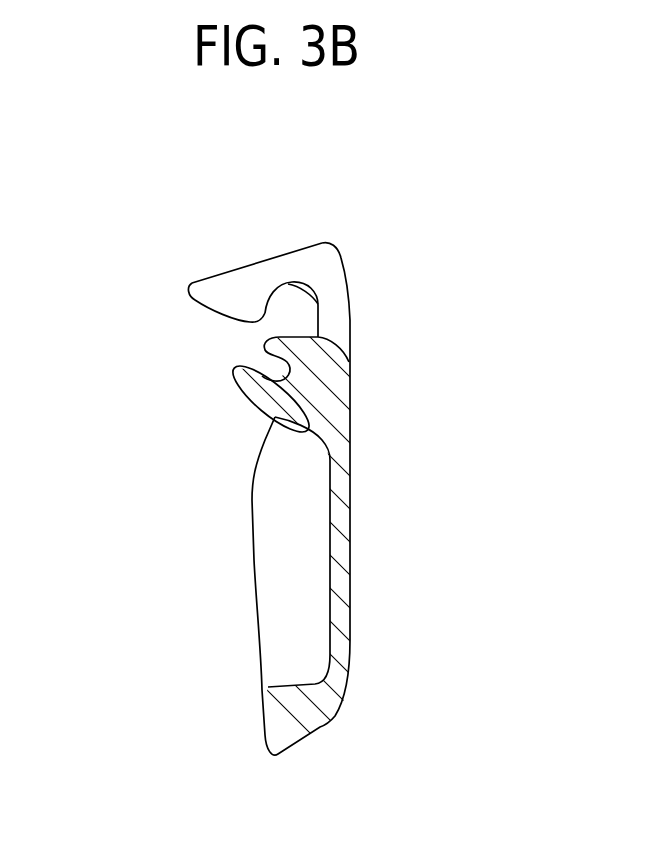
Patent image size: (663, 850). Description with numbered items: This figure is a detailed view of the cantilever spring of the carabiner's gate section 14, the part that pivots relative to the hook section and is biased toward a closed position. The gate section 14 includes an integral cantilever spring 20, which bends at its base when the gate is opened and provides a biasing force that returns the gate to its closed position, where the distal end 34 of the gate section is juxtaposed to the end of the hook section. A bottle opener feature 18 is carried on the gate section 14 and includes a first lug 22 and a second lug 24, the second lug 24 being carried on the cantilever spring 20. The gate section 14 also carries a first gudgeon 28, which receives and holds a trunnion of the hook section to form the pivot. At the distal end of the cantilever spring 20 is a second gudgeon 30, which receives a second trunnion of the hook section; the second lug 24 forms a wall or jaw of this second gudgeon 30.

The gate section 14 is at (352, 327).
The bottle opener feature 18 is at (197, 345).
The cantilever spring 20 is at (344, 519).
The first lug 22 is at (217, 288).
The second lug 24 is at (243, 383).
The first gudgeon 28 is at (318, 305).
The second gudgeon 30 is at (250, 400).
The distal end 34 is at (305, 720).